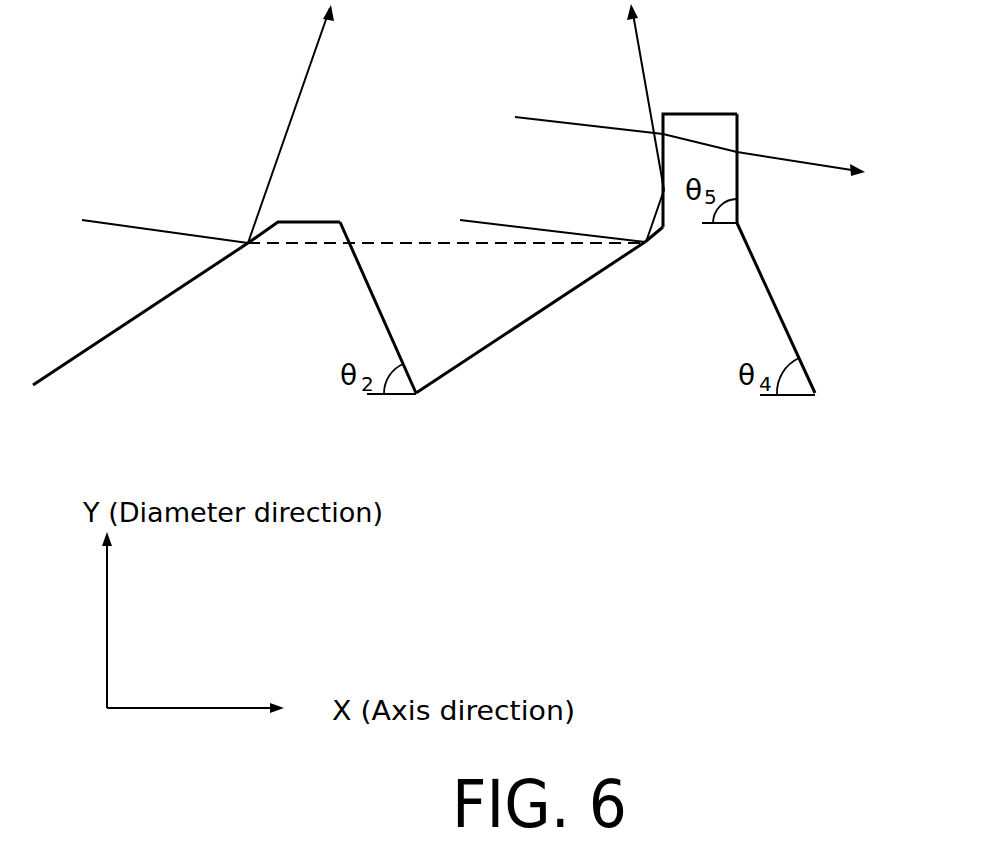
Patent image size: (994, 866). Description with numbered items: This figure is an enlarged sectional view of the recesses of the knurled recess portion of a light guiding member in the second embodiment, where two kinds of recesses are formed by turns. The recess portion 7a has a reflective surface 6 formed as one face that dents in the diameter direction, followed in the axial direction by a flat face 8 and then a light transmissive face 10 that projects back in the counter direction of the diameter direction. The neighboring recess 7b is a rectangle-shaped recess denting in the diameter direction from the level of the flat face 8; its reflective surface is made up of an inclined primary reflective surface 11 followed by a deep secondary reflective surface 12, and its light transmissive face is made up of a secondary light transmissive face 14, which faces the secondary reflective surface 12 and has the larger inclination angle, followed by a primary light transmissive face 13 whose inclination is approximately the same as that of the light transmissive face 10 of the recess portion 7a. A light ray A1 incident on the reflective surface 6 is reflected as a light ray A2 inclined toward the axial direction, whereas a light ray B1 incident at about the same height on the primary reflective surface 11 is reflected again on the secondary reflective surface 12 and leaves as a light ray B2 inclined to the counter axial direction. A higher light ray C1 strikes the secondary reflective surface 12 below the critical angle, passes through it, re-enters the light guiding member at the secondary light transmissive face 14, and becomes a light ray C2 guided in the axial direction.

The reflective surface 6 is at (103, 338).
The recess portion 7a is at (217, 358).
The recess 7b is at (634, 363).
The flat face 8 is at (310, 222).
The light transmissive face 10 is at (375, 306).
The primary reflective surface 11 is at (585, 283).
The secondary reflective surface 12 is at (667, 203).
The primary light transmissive face 13 is at (770, 292).
The secondary light transmissive face 14 is at (737, 178).
The light ray A1 is at (122, 224).
The light ray A2 is at (310, 67).
The light ray B1 is at (490, 224).
The light ray B2 is at (645, 64).
The light ray C1 is at (532, 119).
The light ray C2 is at (823, 163).